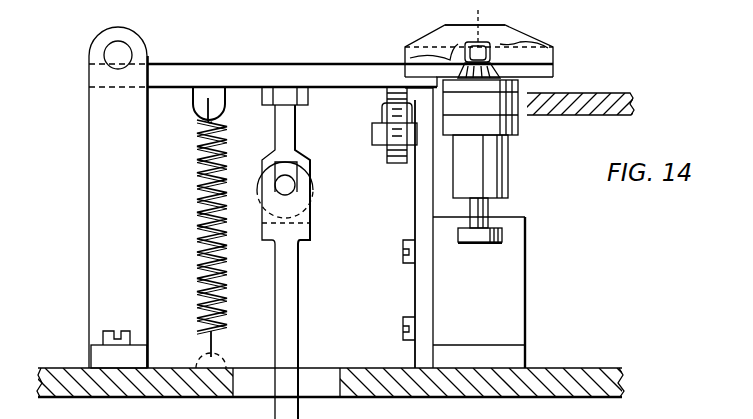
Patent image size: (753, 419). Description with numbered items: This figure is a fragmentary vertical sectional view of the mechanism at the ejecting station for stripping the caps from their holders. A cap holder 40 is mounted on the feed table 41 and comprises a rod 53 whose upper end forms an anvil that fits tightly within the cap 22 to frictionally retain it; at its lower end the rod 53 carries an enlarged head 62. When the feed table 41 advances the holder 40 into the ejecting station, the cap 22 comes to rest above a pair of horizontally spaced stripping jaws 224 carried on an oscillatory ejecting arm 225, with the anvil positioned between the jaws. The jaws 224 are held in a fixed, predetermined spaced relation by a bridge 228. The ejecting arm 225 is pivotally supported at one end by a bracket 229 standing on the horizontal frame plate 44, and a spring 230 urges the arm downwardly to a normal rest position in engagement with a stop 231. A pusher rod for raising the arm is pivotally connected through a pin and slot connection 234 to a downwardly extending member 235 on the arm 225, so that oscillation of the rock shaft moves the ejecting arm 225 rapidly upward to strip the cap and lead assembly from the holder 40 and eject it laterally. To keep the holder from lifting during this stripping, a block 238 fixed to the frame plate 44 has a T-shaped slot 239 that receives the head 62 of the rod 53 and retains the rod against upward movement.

The cap 22 is at (548, 38).
The cap holder 40 is at (530, 83).
The feed table 41 is at (614, 95).
The horizontal frame plate 44 is at (567, 376).
The rod 53 is at (490, 206).
The enlarged head 62 is at (502, 233).
The stripping jaws 224 is at (455, 50).
The ejecting arm 225 is at (257, 50).
The bridge 228 is at (507, 29).
The bracket 229 is at (100, 215).
The spring 230 is at (198, 250).
The stop 231 is at (388, 100).
The pin and slot connection 234 is at (289, 185).
The downwardly extending member 235 is at (287, 132).
The block 238 is at (510, 308).
The T-shaped slot 239 is at (498, 246).